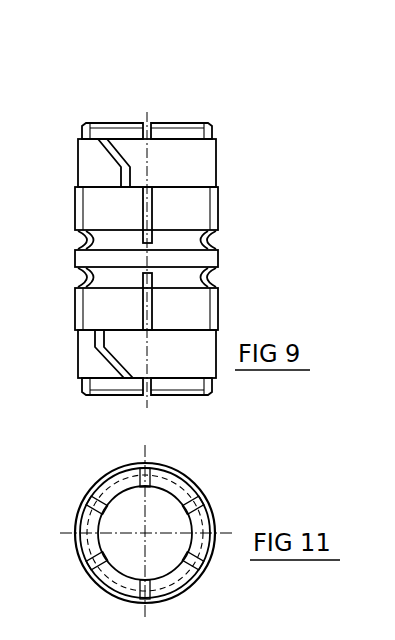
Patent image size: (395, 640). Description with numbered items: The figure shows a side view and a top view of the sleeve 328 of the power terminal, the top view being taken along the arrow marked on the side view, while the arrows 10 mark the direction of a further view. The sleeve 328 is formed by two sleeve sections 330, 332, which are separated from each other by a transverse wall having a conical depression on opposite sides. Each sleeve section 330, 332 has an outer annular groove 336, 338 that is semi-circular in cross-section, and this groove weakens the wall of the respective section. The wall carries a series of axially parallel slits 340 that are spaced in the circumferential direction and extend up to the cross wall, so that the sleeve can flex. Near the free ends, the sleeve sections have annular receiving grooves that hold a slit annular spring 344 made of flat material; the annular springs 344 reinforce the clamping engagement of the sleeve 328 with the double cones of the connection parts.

In FIG. 9, the arrow 10 is at (155, 107).
In FIG. 9, the sleeve 328 is at (173, 262).
In FIG. 11, the sleeve 328 is at (178, 531).
In FIG. 9, the sleeve section 330 is at (185, 227).
In FIG. 9, the sleeve section 332 is at (185, 327).
In FIG. 9, the outer annular groove 336 is at (207, 240).
In FIG. 9, the outer annular groove 338 is at (207, 275).
In FIG. 9, the axially parallel slits 340 is at (147, 122).
In FIG. 11, the axially parallel slits 340 is at (212, 510).
In FIG. 9, the slit annular spring 344 is at (190, 184).